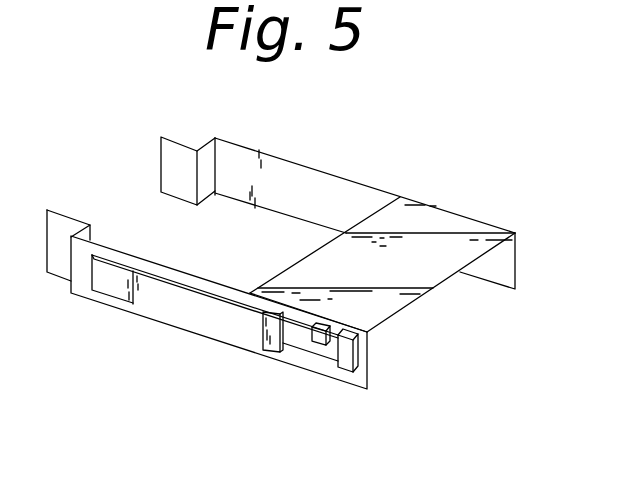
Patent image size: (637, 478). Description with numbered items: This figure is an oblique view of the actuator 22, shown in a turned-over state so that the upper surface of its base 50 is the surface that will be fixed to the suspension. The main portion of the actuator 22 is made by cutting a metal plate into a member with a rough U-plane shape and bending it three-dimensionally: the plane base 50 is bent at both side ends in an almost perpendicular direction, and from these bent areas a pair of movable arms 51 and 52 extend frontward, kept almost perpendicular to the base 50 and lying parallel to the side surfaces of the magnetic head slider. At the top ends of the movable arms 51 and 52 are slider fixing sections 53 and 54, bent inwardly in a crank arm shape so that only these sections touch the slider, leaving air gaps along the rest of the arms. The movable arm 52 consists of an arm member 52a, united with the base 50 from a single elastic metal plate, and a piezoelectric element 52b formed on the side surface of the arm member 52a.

The actuator 22 is at (462, 179).
The base 50 is at (368, 295).
The movable arm 51 is at (325, 187).
The movable arm 52 is at (293, 353).
The arm member 52a is at (77, 278).
The piezoelectric element 52b is at (178, 305).
The slider fixing section 53 is at (168, 165).
The slider fixing section 54 is at (62, 232).